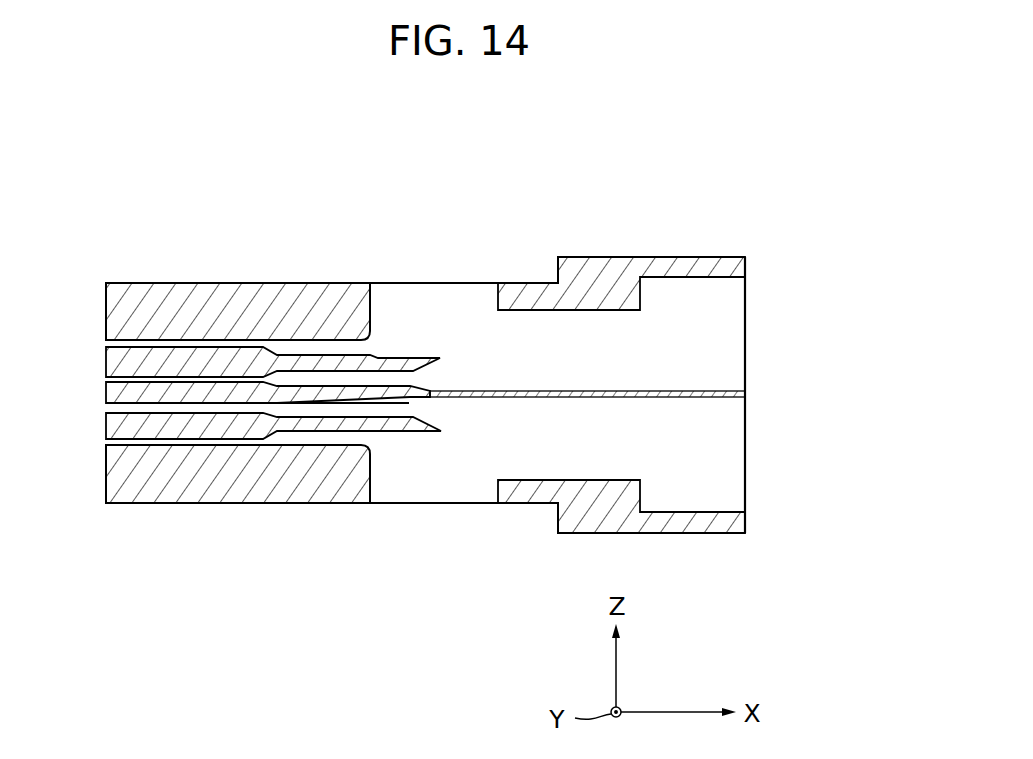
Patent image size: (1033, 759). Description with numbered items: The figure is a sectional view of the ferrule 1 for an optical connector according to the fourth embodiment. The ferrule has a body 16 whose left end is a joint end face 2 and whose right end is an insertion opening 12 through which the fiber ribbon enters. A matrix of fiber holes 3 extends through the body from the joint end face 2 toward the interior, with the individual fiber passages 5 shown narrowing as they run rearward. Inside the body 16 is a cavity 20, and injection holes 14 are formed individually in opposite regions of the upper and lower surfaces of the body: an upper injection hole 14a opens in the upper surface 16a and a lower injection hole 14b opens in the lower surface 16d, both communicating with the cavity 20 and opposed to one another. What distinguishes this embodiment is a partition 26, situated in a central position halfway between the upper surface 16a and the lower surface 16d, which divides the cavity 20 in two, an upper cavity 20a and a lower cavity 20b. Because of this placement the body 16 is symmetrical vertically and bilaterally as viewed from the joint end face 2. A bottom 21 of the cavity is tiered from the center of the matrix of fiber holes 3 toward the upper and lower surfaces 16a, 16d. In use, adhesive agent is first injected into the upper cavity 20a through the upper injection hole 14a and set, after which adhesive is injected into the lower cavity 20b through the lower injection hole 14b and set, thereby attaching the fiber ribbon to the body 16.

The ferrule for optical connector 1 is at (611, 198).
The joint end face 2 is at (106, 313).
The fiber holes 3 is at (165, 352).
The fiber cladding 5 is at (395, 353).
The insertion opening 12 is at (747, 303).
The injection holes 14 is at (467, 296).
The upper injection hole 14a is at (425, 270).
The lower injection hole 14b is at (425, 518).
The body 16 is at (226, 272).
The upper surface 16a is at (292, 283).
The lower surface 16d is at (194, 500).
The cavity 20 is at (600, 434).
The upper cavity 20a is at (689, 296).
The lower cavity 20b is at (685, 493).
The bottom 21 is at (438, 425).
The partition 26 is at (712, 392).